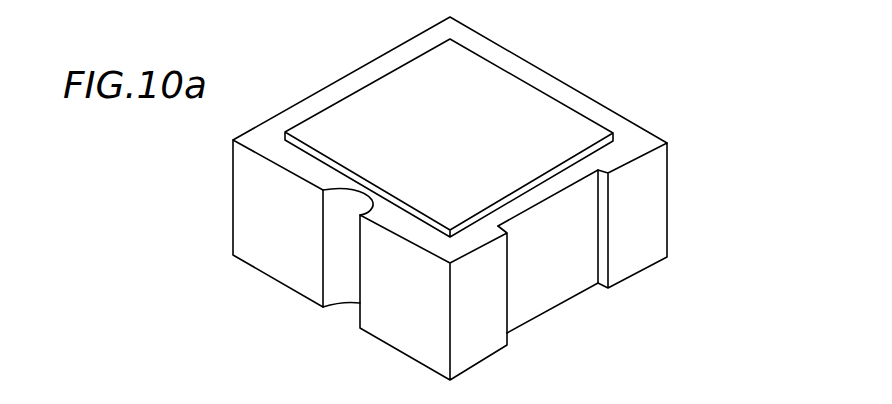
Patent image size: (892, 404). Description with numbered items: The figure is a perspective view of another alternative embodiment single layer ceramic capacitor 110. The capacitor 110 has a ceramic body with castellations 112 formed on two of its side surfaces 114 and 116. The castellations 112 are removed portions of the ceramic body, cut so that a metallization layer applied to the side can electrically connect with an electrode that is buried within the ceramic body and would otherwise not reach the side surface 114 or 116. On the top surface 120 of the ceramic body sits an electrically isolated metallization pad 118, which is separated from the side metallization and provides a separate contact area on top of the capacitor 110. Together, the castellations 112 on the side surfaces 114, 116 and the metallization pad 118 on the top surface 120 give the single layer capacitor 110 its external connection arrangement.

The single layer ceramic capacitor 110 is at (630, 71).
The castellations 112 is at (348, 273).
The side surface 114 is at (633, 212).
The side surface 116 is at (272, 220).
The electrically isolated metallization pad 118 is at (378, 100).
The top surface 120 is at (527, 72).